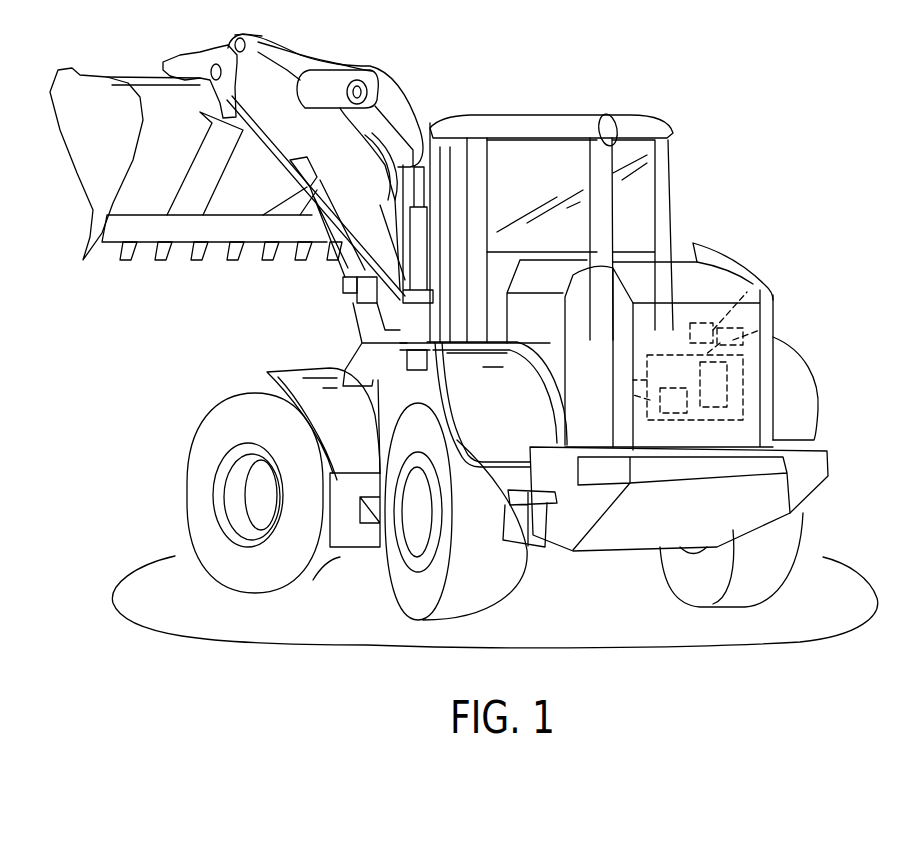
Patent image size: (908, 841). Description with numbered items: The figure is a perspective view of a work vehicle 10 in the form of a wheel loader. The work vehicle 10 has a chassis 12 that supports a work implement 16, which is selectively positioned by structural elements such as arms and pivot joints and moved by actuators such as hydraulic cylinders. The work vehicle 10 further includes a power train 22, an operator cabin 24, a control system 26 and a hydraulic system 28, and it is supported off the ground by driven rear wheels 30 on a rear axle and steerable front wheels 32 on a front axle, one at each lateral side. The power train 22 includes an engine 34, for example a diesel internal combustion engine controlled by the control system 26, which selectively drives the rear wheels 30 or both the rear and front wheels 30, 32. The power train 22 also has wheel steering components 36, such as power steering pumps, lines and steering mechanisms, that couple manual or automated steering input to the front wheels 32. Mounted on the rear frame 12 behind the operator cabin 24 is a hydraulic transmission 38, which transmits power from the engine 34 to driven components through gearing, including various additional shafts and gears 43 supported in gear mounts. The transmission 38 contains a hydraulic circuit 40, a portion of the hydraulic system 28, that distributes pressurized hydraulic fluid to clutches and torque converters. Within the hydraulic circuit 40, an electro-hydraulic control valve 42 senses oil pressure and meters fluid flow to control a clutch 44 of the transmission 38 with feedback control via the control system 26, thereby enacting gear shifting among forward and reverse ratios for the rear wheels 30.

The work vehicle 10 is at (781, 177).
The chassis 12 is at (347, 553).
The work implement 16 is at (75, 133).
The power train 22 is at (613, 367).
The operator cabin 24 is at (633, 115).
The control system 26 is at (770, 308).
The hydraulic system 28 is at (692, 322).
The rear wheels 30 is at (413, 563).
The front wheels 32 is at (233, 533).
The engine 34 is at (728, 425).
The wheel steering components 36 is at (745, 375).
The hydraulic transmission 38 is at (650, 395).
The hydraulic circuit 40 is at (697, 314).
The control valve 42 is at (768, 280).
The additional shafts and gears 43 is at (668, 420).
The clutch 44 is at (687, 422).